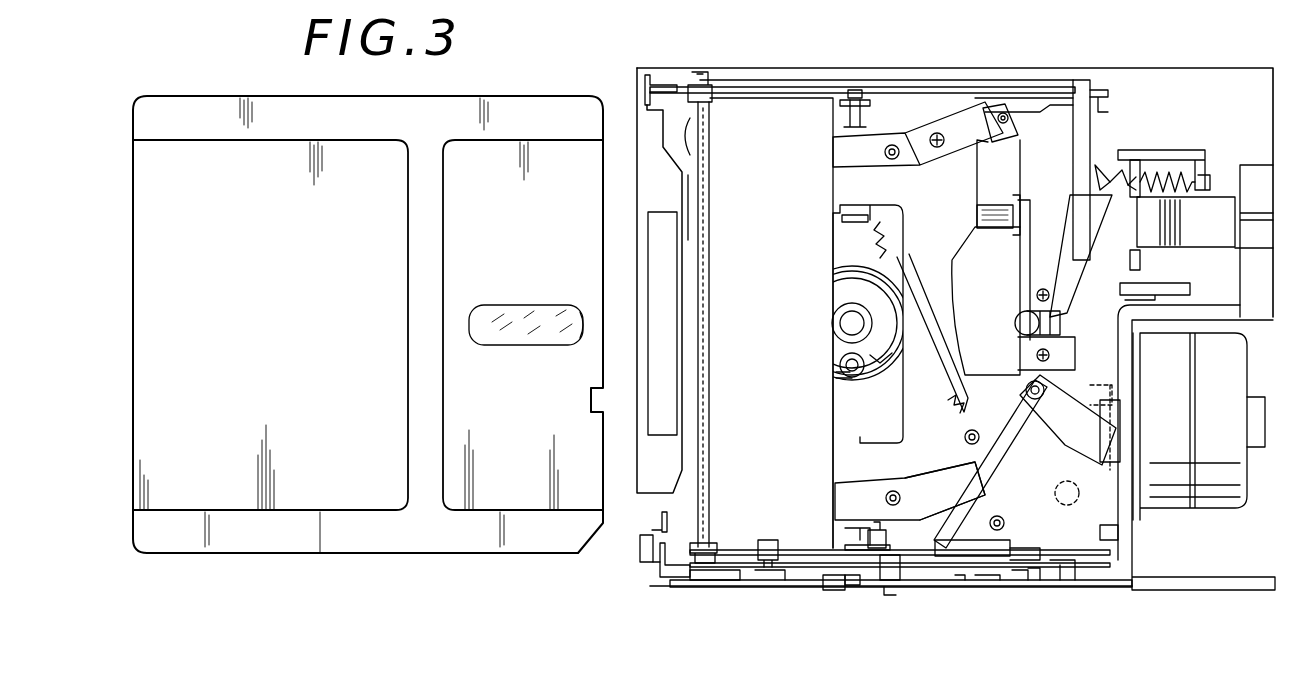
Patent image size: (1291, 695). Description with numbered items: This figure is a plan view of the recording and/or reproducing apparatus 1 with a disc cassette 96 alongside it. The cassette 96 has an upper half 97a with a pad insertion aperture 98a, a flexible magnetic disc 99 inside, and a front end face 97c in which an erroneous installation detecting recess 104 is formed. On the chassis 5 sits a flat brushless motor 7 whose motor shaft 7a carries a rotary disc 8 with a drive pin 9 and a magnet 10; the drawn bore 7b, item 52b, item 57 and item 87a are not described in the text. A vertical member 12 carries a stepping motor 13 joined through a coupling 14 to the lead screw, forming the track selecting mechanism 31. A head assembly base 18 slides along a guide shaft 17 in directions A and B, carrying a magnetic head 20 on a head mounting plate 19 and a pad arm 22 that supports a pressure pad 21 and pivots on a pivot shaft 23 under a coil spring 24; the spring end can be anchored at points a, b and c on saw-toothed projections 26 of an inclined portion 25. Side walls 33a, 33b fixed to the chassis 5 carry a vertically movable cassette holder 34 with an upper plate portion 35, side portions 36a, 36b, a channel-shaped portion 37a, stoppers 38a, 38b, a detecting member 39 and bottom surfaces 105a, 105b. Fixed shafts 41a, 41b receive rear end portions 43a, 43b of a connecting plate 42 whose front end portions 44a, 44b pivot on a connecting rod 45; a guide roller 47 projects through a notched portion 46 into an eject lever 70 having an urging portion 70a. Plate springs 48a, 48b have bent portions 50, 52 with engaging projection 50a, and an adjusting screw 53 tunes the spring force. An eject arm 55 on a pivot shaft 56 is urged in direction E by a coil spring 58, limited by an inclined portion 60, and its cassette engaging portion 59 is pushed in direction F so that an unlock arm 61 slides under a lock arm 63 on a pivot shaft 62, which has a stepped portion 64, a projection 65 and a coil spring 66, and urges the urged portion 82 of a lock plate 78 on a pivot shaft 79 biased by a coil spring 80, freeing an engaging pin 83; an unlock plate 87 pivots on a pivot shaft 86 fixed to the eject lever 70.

The recording and/or reproducing apparatus 1 is at (1093, 52).
The chassis 5 is at (1120, 75).
The flat brushless motor 7 is at (830, 236).
The motor shaft 7a is at (840, 318).
The head shaft bore 7b is at (845, 330).
The rotary disc 8 is at (836, 378).
The drive pin 9 is at (840, 366).
The magnet 10 is at (840, 292).
The vertical member 12 is at (1118, 310).
The stepping motor 13 is at (1247, 382).
The coupling 14 is at (1108, 440).
The guide shaft 17 is at (990, 228).
The head assembly base 18 is at (1020, 265).
The head mounting plate 19 is at (1018, 354).
The magnetic head 20 is at (1037, 296).
The pressure pad 21 is at (1015, 322).
The pad arm 22 is at (1222, 197).
The pivot shaft 23 is at (1150, 150).
The coil spring 24 is at (1190, 170).
The inclined portion 25 is at (1108, 195).
The saw-toothed projections 26 is at (1087, 195).
The track selecting mechanism 31 is at (1247, 345).
The side wall 33a is at (690, 580).
The side wall 33b is at (785, 87).
The cassette holder 34 is at (648, 205).
The upper plate portion 35 is at (970, 186).
The side portion 36a is at (658, 572).
The side portion 36b is at (645, 95).
The channel-shaped portion 37a is at (655, 570).
The stopper 38a is at (1118, 540).
The stopper 38b is at (1108, 106).
The detecting member 39 is at (1098, 400).
The fixed shaft 41a is at (868, 532).
The fixed shaft 41b is at (858, 90).
The connecting plate 42 is at (735, 98).
The rear end portion 43a is at (850, 547).
The rear end portion 43b is at (845, 100).
The front end portion 44a is at (710, 543).
The front end portion 44b is at (692, 88).
The connecting rod 45 is at (710, 255).
The notched portion 46 is at (778, 587).
The guide roller 47 is at (766, 580).
The plate spring 48a is at (860, 483).
The plate spring 48b is at (888, 148).
The trapezoidal bent portion 50 is at (1000, 500).
The engaging projection 50a is at (1003, 518).
The trapezoidal bent portion 52 is at (988, 108).
The pivot pin 52b is at (1003, 112).
The adjusting screw 53 is at (937, 150).
The eject arm 55 is at (1022, 392).
The pivot shaft 56 is at (1042, 398).
The stop member 57 is at (852, 215).
The coil spring 58 is at (895, 236).
The cassette engaging portion 59 is at (1078, 495).
The inclined portion 60 is at (1085, 435).
The unlock arm 61 is at (948, 492).
The pivot shaft 62 is at (895, 587).
The lock arm 63 is at (985, 556).
The stepped portion 64 is at (1018, 587).
The projection 65 is at (890, 595).
The coil spring 66 is at (855, 525).
The eject lever 70 is at (735, 587).
The urging portion 70a is at (658, 520).
The lock plate 78 is at (990, 587).
The pivot shaft 79 is at (1060, 587).
The coil spring 80 is at (1078, 587).
The urged portion 82 is at (1035, 587).
The engaging pin 83 is at (958, 587).
The pivot shaft 86 is at (833, 590).
The unlock plate 87 is at (848, 590).
The washer 87a is at (855, 587).
The disc cassette 96 is at (188, 96).
The upper half 97a is at (362, 553).
The front end face 97c is at (602, 465).
The pad insertion aperture 98a is at (520, 306).
The flexible magnetic disc 99 is at (530, 345).
The erroneous installation detecting recess 104 is at (600, 412).
The bottom surface 105a is at (642, 552).
The bottom surface 105b is at (1058, 98).
The direction A is at (1036, 153).
The direction B is at (1054, 168).
The direction E is at (945, 454).
The direction F is at (961, 439).
The anchoring point a is at (1100, 165).
The anchoring point b is at (1118, 168).
The anchoring point c is at (1134, 176).